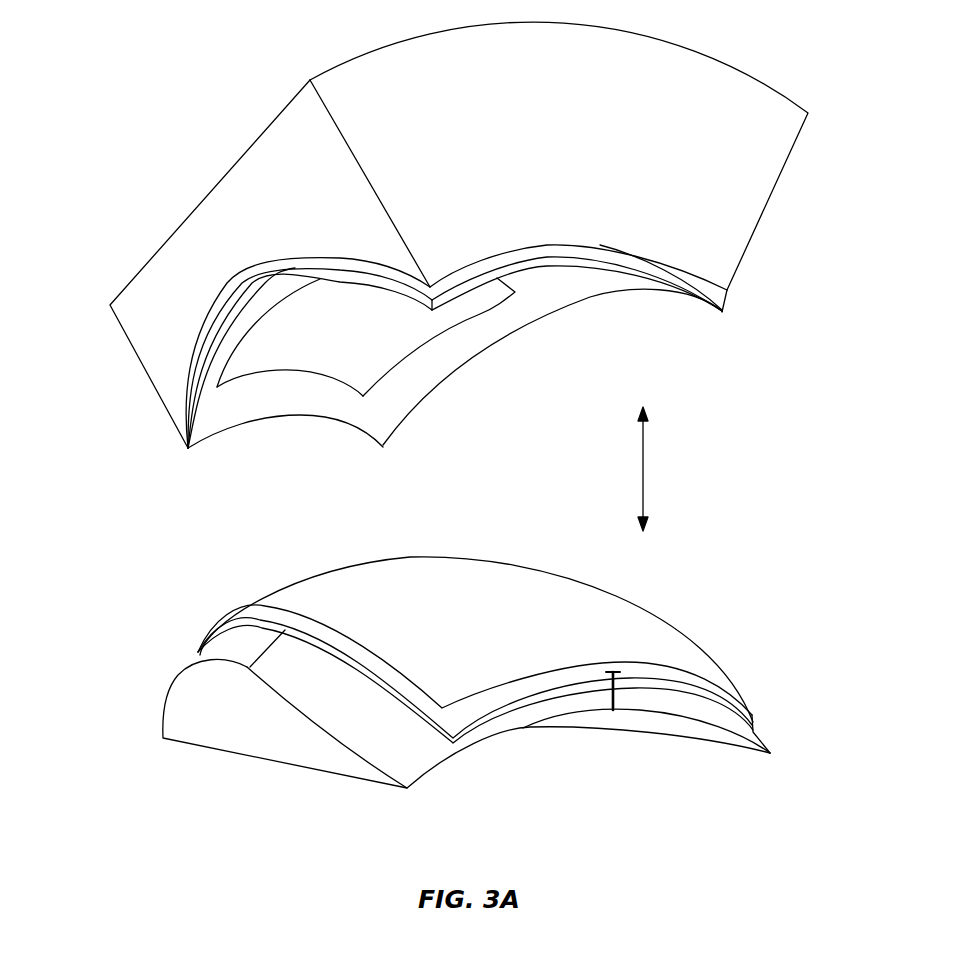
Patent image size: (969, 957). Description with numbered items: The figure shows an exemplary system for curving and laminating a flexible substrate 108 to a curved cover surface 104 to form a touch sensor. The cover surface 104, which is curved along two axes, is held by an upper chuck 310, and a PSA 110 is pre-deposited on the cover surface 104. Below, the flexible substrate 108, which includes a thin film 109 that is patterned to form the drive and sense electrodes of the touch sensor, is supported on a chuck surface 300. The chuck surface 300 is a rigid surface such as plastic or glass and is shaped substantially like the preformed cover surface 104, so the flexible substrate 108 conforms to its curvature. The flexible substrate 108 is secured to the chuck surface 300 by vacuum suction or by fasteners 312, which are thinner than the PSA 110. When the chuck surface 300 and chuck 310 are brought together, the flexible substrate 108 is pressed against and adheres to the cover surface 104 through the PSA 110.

The chuck 310 is at (195, 242).
The cover surface 104 is at (273, 388).
The PSA 110 is at (382, 347).
The thin film 109 is at (373, 583).
The flexible substrate 108 is at (477, 710).
The chuck surface 300 is at (272, 740).
The fasteners 312 is at (250, 667).